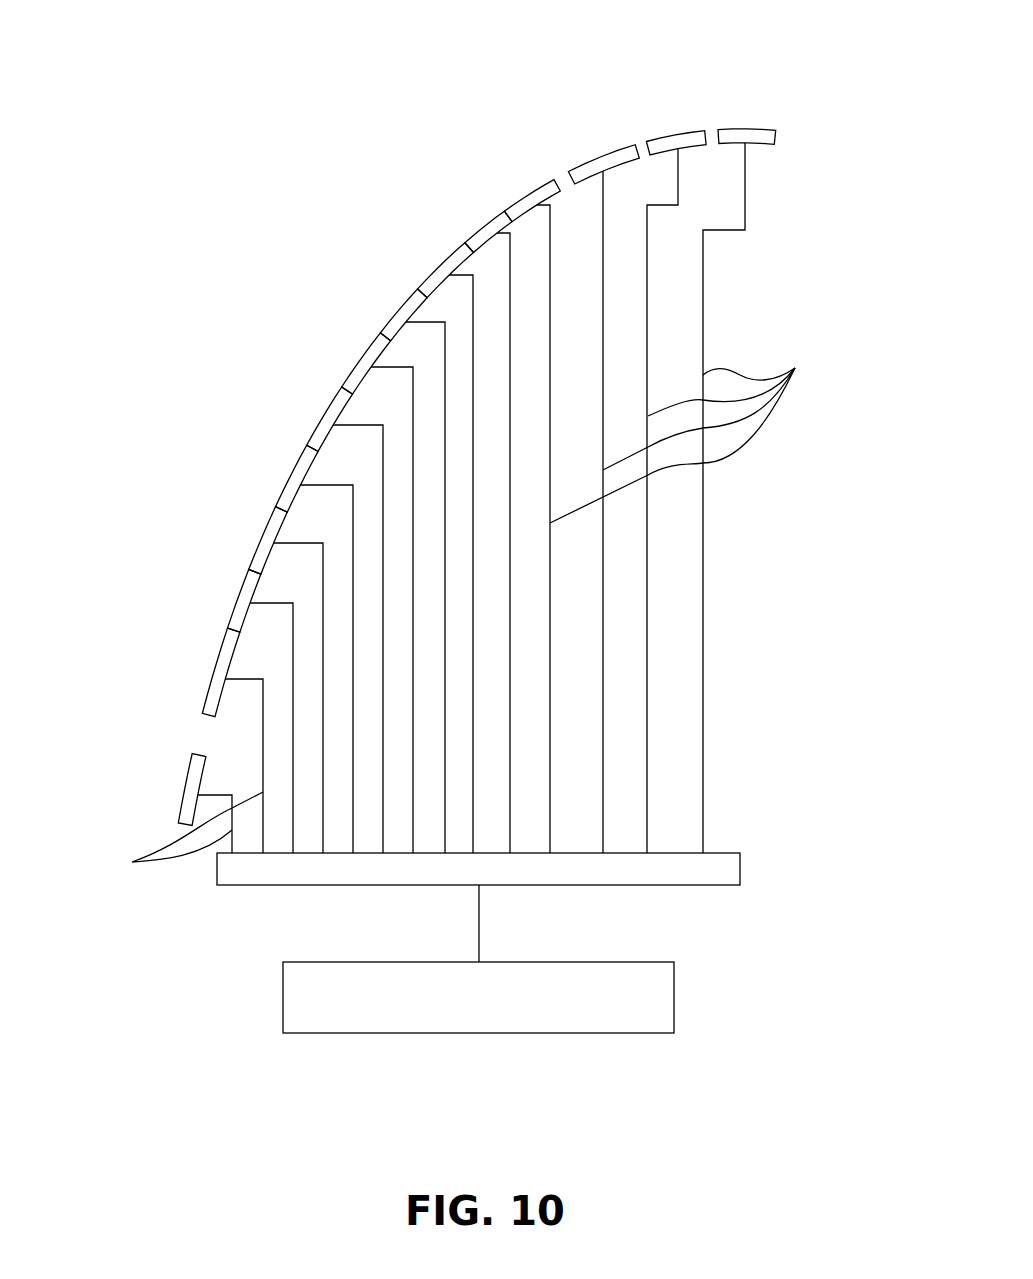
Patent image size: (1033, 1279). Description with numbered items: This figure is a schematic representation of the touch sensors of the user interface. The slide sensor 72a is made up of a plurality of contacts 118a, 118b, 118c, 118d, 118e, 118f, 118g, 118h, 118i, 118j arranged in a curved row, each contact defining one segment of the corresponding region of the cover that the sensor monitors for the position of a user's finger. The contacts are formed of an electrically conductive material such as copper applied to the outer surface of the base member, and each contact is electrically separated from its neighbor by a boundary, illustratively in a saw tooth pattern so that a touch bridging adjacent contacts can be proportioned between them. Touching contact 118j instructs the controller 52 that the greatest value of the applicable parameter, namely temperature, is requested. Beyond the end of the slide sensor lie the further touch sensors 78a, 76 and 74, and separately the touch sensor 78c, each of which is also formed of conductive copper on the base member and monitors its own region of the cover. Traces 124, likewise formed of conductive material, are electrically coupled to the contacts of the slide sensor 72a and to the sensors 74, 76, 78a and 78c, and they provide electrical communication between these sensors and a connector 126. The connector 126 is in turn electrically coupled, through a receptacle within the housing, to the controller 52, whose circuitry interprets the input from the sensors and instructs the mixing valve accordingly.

The touch sensor 72a is at (394, 150).
The touch sensor 74 is at (738, 127).
The touch sensor 76 is at (678, 130).
The touch sensor 78a is at (588, 155).
The touch sensor 78c is at (185, 778).
The contact 118a is at (212, 675).
The contact 118b is at (240, 602).
The contact 118c is at (263, 545).
The contact 118d is at (292, 485).
The contact 118e is at (322, 425).
The contact 118f is at (362, 367).
The contact 118g is at (393, 322).
The contact 118h is at (440, 273).
The contact 118i is at (477, 230).
The contact 118j is at (525, 193).
The traces 124 is at (461, 615).
The connector 126 is at (740, 858).
The controller 52 is at (674, 1000).